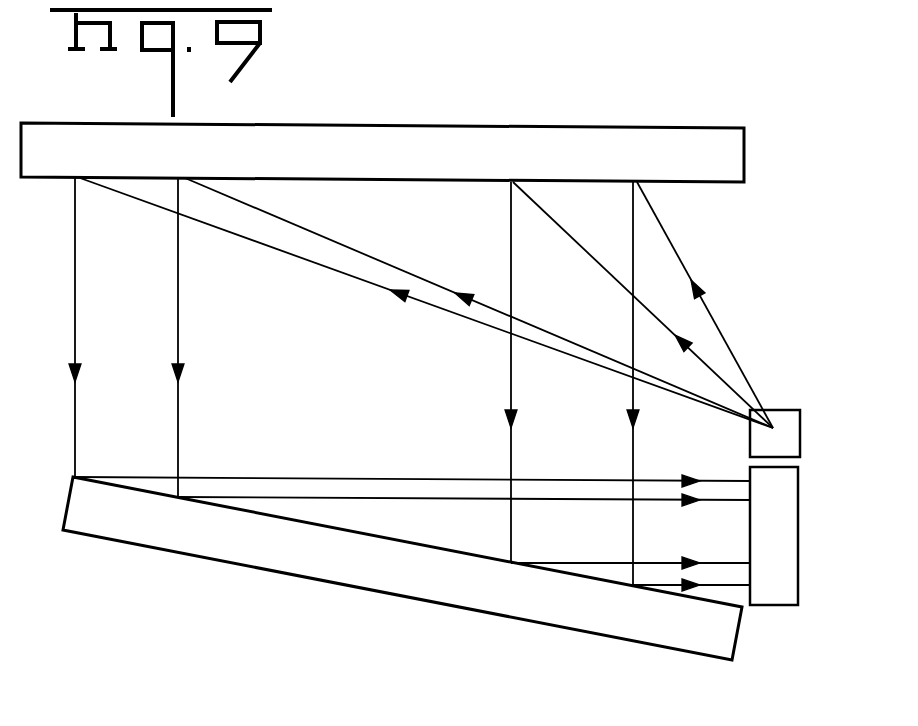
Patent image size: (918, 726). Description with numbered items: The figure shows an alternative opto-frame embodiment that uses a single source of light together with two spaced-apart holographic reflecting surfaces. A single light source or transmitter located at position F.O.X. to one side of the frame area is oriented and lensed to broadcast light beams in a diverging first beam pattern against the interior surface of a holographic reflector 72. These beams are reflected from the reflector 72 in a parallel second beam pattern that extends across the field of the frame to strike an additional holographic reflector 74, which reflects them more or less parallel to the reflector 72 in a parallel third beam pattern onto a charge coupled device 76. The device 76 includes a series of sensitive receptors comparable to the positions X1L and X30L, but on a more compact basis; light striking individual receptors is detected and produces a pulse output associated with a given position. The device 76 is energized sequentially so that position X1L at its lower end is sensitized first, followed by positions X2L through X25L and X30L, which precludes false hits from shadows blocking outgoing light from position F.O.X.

The holographic reflector 72 is at (505, 133).
The additional holographic reflector 74 is at (292, 550).
The charge coupled device 76 is at (777, 483).
The single source of light position F.O.X. is at (776, 425).
The receptor position X30L is at (750, 477).
The receptor position X25L is at (751, 516).
The receptor position X2L is at (752, 563).
The receptor position X1L is at (742, 587).